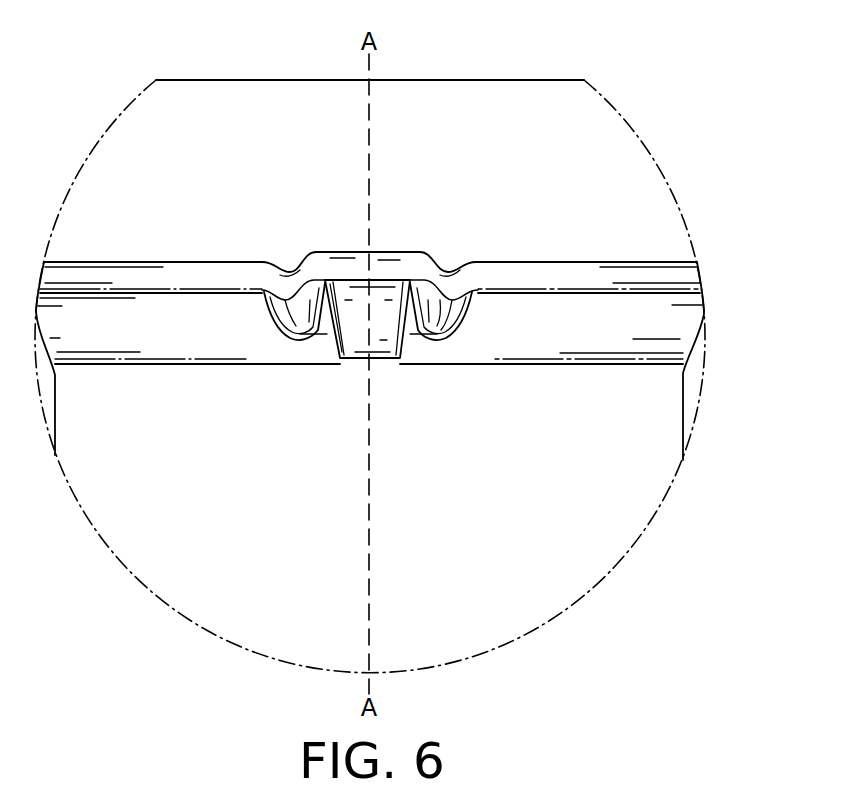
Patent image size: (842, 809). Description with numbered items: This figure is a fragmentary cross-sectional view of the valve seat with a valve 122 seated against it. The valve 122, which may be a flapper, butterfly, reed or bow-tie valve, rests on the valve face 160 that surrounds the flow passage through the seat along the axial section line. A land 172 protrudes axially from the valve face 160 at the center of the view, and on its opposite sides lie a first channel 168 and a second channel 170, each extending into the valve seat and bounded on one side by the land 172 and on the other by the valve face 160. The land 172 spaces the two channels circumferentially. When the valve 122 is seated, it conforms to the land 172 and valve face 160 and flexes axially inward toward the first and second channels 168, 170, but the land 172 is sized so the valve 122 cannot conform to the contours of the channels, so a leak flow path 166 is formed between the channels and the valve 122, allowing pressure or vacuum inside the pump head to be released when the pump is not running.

The valve 122 is at (448, 260).
The valve face 160 is at (682, 274).
The leak flow path 166 is at (436, 332).
The first channel 168 is at (443, 316).
The second channel 170 is at (303, 337).
The land 172 is at (356, 343).